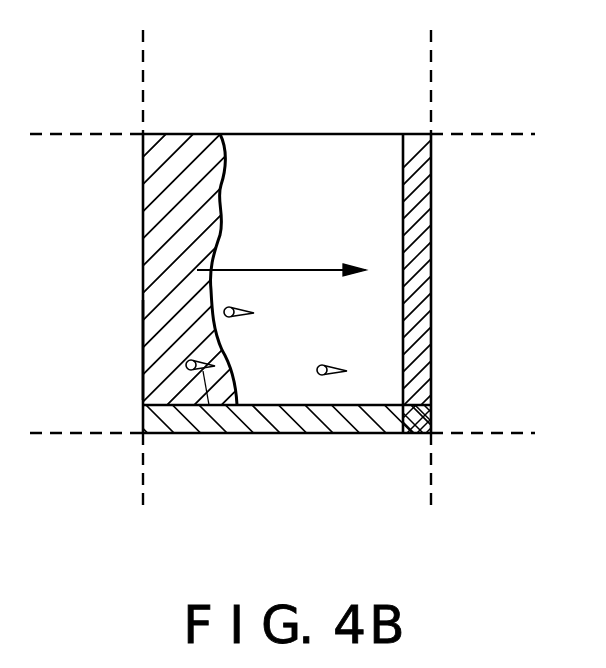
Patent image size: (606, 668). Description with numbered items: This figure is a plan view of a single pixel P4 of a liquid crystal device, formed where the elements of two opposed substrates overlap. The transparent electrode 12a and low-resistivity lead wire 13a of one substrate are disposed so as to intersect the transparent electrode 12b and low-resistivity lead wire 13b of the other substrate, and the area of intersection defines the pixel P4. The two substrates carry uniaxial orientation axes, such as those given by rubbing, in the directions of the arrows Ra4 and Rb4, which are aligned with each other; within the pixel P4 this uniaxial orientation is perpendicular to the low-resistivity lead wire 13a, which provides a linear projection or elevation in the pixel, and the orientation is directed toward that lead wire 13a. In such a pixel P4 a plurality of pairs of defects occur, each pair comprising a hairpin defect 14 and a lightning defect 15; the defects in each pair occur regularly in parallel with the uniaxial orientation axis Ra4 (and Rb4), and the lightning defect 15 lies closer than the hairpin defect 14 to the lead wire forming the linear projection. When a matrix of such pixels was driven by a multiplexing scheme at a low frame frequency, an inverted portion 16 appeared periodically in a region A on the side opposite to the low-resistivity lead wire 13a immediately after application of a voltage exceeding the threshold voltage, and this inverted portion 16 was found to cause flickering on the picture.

The inverted portion 16 is at (177, 157).
The transparent electrode 12a is at (313, 95).
The transparent electrode 12b is at (88, 290).
The low-resistivity lead wire 13a is at (431, 173).
The low-resistivity lead wire 13b is at (340, 435).
The pixel P4 is at (380, 338).
The uniaxial orientation axis Ra4 is at (288, 235).
The uniaxial orientation axis Rb4 is at (270, 268).
The region A is at (143, 343).
The hairpin defect 14 is at (183, 371).
The lightning defect 15 is at (203, 371).